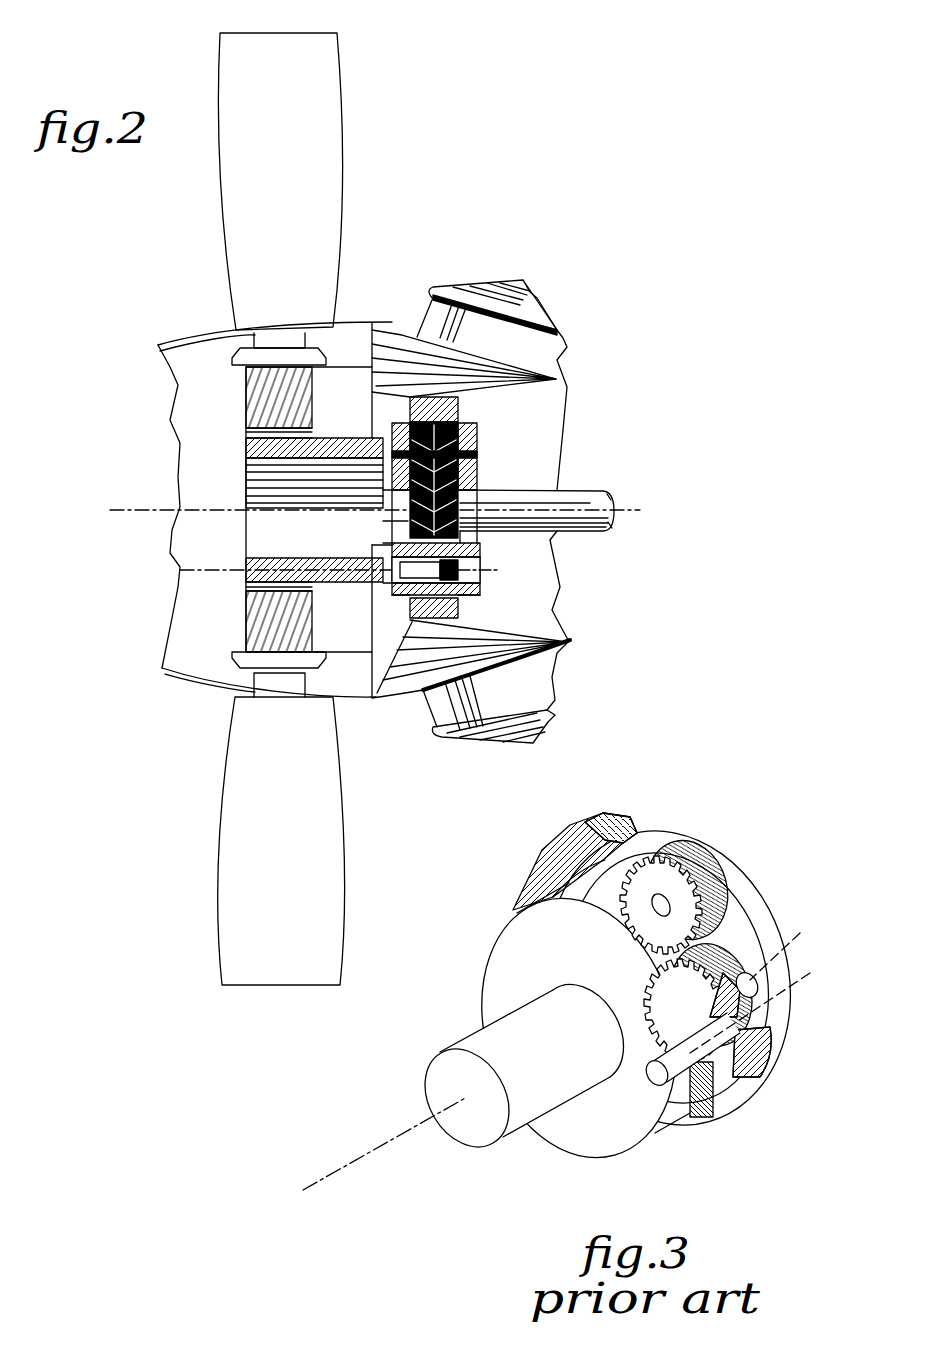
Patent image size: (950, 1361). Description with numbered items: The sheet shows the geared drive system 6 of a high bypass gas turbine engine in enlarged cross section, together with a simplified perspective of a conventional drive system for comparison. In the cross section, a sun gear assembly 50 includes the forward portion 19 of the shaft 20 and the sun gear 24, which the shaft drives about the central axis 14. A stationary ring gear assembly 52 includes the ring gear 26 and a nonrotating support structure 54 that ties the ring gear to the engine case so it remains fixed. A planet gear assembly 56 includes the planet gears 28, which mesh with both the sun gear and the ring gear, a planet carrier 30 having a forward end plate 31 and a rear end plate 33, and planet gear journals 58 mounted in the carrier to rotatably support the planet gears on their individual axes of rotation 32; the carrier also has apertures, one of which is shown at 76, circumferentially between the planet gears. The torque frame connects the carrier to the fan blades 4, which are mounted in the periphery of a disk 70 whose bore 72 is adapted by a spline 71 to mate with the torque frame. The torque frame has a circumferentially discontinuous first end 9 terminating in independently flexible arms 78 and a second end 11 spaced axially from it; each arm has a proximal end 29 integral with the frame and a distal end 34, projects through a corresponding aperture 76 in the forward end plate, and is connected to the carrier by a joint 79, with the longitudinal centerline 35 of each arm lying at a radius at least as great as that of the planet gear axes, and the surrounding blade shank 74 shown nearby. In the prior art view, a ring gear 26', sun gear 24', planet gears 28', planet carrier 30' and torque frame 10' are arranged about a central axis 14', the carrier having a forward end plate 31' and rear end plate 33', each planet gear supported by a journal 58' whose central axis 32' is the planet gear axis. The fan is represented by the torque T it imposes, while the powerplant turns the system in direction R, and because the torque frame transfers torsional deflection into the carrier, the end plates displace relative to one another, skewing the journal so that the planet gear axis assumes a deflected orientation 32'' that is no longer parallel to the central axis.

In FIG. 2, the fan blades 4 is at (288, 131).
In FIG. 2, the drive system 6 is at (268, 526).
In FIG. 2, the first end 9 is at (393, 546).
In FIG. 2, the second end 11 is at (247, 438).
In FIG. 2, the central axis 14 is at (369, 509).
In FIG. 2, the forward portion 19 is at (500, 532).
In FIG. 2, the shaft 20 is at (585, 500).
In FIG. 2, the sun gear 24 is at (464, 504).
In FIG. 2, the ring gear 26 is at (406, 412).
In FIG. 2, the planet gears 28 is at (470, 407).
In FIG. 2, the proximal end 29 is at (397, 583).
In FIG. 2, the planet carrier 30 is at (396, 494).
In FIG. 2, the forward end plate 31 is at (407, 488).
In FIG. 2, the planet gear axes of rotation 32 is at (280, 479).
In FIG. 2, the rear end plate 33 is at (464, 453).
In FIG. 2, the distal end 34 is at (458, 612).
In FIG. 2, the longitudinal centerline 35 is at (190, 568).
In FIG. 2, the sun gear assembly 50 is at (408, 519).
In FIG. 2, the stationary ring gear assembly 52 is at (522, 347).
In FIG. 2, the nonrotating support structure 54 is at (418, 343).
In FIG. 2, the planet gear assembly 56 is at (480, 463).
In FIG. 2, the planet gear journals 58 is at (464, 452).
In FIG. 2, the disk 70 is at (246, 612).
In FIG. 2, the spline 71 is at (247, 432).
In FIG. 2, the bore 72 is at (247, 582).
In FIG. 2, the lower blade shank 74 is at (471, 681).
In FIG. 2, the aperture 76 is at (390, 590).
In FIG. 2, the arms 78 is at (415, 576).
In FIG. 2, the joint 79 is at (458, 577).
In FIG. 3, the torque frame 10' is at (515, 1073).
In FIG. 3, the central axis 14' is at (382, 1143).
In FIG. 3, the sun gear 24' is at (711, 994).
In FIG. 3, the ring gear 26' is at (565, 861).
In FIG. 3, the planet gears 28' is at (690, 958).
In FIG. 3, the planet carrier 30' is at (735, 1104).
In FIG. 3, the forward end plate 31' is at (579, 1028).
In FIG. 3, the central axis 32' is at (749, 1011).
In FIG. 3, the deflected orientation 32'' is at (818, 924).
In FIG. 3, the rear end plate 33' is at (668, 977).
In FIG. 3, the journal 58' is at (780, 1025).
In FIG. 3, the torque T is at (428, 1152).
In FIG. 3, the direction of rotation R is at (866, 953).